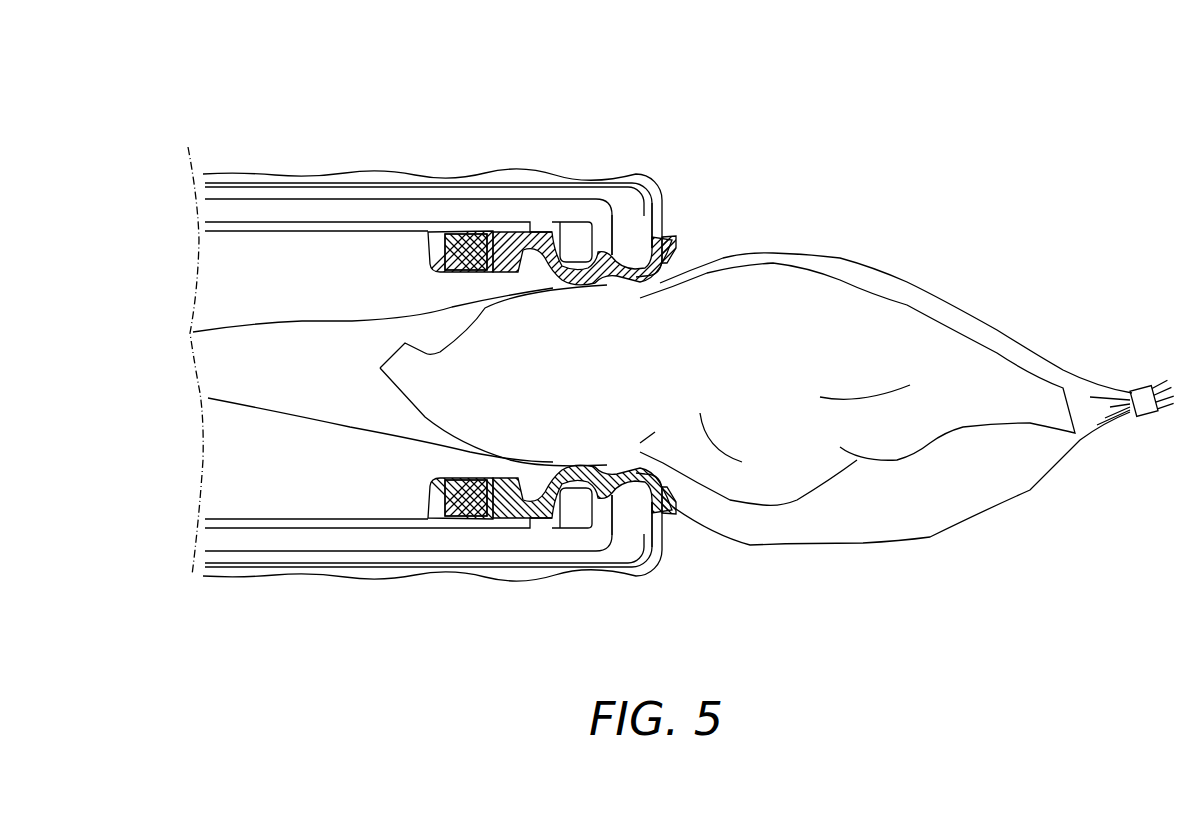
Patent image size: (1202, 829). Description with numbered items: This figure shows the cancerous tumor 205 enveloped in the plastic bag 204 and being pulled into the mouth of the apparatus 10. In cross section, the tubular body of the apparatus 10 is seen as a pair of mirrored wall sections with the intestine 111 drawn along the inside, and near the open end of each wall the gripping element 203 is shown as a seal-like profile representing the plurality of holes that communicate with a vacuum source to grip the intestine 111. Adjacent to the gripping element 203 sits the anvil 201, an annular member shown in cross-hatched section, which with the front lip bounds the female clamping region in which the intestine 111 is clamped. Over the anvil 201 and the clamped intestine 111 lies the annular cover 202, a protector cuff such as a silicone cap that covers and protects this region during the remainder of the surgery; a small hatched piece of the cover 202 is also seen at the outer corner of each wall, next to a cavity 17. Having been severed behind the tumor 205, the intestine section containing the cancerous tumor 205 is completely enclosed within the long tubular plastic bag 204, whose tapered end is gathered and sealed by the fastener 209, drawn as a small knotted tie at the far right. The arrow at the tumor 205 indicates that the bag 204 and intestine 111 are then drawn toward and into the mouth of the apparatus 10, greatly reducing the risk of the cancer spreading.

The apparatus 10 is at (603, 113).
The cavity 17 is at (622, 252).
The intestine 111 is at (488, 173).
The anvil 201 is at (460, 232).
The annular cover 202 is at (428, 243).
The gripping element 203 is at (542, 223).
The plastic bag 204 is at (945, 300).
The cancerous tumor 205 is at (686, 375).
The fastener 209 is at (1150, 416).